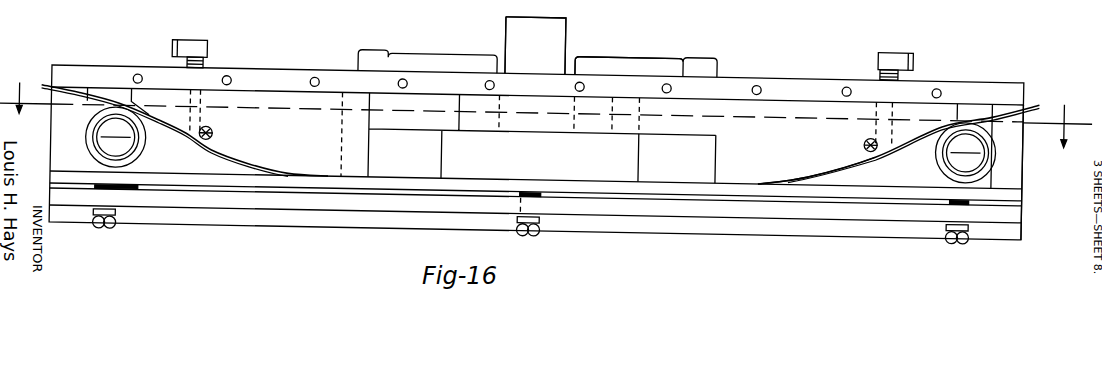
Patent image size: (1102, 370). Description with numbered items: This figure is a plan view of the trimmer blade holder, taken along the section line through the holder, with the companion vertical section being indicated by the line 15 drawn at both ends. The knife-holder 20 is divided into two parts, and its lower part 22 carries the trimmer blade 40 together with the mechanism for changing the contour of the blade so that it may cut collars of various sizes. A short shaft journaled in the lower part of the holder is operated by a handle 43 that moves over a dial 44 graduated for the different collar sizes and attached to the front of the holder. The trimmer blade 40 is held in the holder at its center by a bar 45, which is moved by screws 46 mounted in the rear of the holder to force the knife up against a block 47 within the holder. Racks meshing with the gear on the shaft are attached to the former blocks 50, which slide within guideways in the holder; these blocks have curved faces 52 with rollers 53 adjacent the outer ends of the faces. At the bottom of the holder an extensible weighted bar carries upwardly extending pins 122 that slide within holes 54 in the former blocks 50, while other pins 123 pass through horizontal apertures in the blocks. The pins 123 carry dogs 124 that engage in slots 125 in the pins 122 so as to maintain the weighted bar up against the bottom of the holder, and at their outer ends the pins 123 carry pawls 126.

The section line 15— 15 is at (546, 106).
The knife-holder 20 is at (793, 66).
The lower part of the knife-holder 22 is at (1007, 155).
The trimmer blade 40 is at (817, 163).
The handle 43 is at (563, 22).
The dial 44 is at (663, 51).
The bar 45 is at (317, 177).
The screws 46 is at (118, 226).
The block 47 is at (617, 154).
The former blocks 50 is at (521, 148).
The curved faces 52 is at (233, 152).
The rollers 53 is at (88, 119).
The holes 54 is at (220, 137).
The pins 122 is at (213, 125).
The pins 123 is at (207, 60).
The dogs 124 is at (200, 134).
The slots 125 is at (545, 141).
The pawls 126 is at (172, 43).